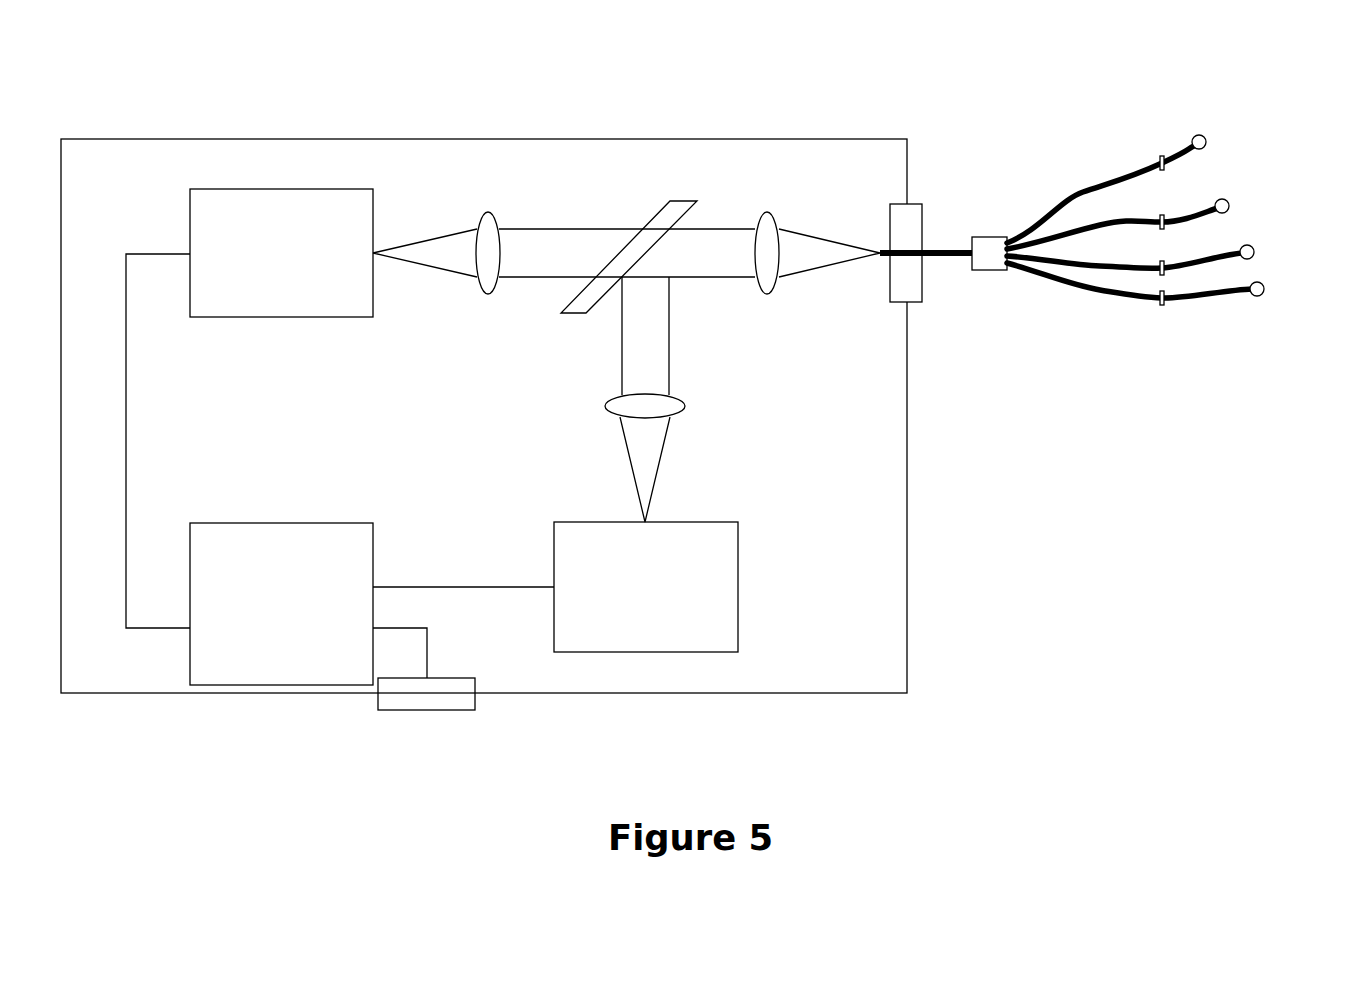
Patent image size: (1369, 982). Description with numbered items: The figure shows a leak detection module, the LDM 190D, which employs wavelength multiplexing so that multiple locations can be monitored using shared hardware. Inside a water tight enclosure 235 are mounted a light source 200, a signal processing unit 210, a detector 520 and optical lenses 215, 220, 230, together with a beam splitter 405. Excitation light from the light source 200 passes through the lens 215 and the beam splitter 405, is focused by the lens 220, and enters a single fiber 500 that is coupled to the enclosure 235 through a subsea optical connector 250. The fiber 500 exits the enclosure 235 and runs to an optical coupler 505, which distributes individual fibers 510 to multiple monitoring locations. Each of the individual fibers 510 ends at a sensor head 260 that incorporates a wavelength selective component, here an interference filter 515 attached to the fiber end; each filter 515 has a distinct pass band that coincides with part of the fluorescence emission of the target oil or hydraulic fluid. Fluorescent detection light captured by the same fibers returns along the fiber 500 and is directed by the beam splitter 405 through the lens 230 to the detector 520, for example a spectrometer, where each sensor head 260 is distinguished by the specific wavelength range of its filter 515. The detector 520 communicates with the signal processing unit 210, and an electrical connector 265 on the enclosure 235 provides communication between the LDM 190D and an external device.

The LDM 190D is at (97, 103).
The water tight enclosure 235 is at (415, 139).
The light source 200 is at (260, 297).
The signal processing unit 210 is at (260, 662).
The detector 520 is at (625, 614).
The electrical connector 265 is at (460, 678).
The optical lens 215 is at (490, 213).
The beam splitter 405 is at (681, 200).
The optical lens 220 is at (768, 213).
The optical lens 230 is at (683, 400).
The subsea optical connector 250 is at (915, 204).
The fiber 500 is at (940, 258).
The optical coupler 505 is at (983, 236).
The individual fibers 510 is at (1088, 310).
The interference filter 515 is at (1160, 158).
The sensor head 260 is at (1205, 137).